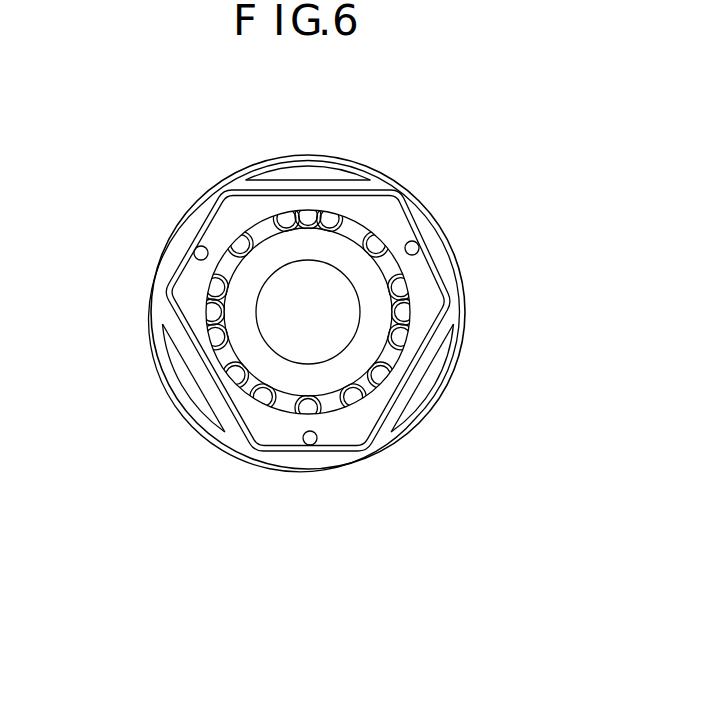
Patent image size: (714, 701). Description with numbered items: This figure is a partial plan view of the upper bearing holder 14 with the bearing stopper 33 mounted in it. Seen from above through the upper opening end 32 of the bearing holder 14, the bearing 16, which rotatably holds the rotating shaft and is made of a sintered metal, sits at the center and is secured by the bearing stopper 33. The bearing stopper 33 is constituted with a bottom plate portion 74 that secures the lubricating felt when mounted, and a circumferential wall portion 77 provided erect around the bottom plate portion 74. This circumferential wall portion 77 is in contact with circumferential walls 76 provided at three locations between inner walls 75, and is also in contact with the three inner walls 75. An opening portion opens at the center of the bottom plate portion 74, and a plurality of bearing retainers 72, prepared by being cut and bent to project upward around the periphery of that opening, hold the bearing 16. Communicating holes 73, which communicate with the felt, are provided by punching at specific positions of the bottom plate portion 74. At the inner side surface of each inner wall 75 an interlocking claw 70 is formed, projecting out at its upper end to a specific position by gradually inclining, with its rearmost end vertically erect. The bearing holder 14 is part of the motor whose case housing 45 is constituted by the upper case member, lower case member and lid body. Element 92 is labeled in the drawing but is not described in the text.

The upper bearing holder 14 is at (461, 340).
The bearing 16 is at (327, 373).
The upper opening end 32 is at (447, 233).
The bearing stopper 33 is at (430, 288).
The case housing 45 is at (410, 398).
The interlocking claw 70 is at (302, 192).
The bearing retainers 72 is at (375, 240).
The communicating holes 73 is at (194, 252).
The bottom plate portion 74 is at (275, 442).
The inner walls 75 is at (328, 181).
The circumferential walls 76 is at (195, 202).
The circumferential wall portion 77 is at (163, 273).
The flange portion 92 is at (222, 217).